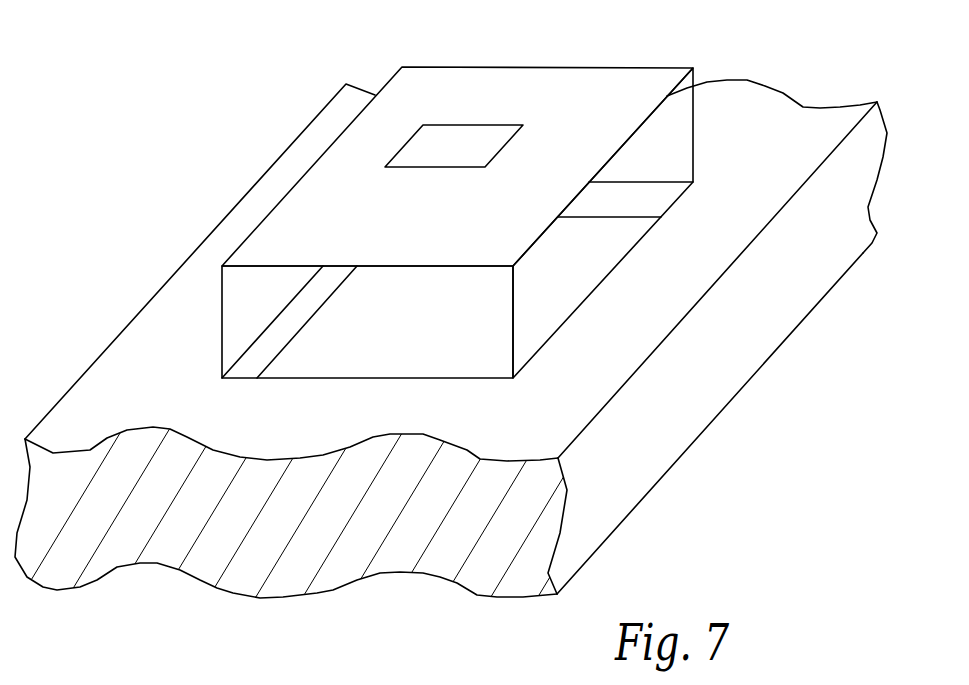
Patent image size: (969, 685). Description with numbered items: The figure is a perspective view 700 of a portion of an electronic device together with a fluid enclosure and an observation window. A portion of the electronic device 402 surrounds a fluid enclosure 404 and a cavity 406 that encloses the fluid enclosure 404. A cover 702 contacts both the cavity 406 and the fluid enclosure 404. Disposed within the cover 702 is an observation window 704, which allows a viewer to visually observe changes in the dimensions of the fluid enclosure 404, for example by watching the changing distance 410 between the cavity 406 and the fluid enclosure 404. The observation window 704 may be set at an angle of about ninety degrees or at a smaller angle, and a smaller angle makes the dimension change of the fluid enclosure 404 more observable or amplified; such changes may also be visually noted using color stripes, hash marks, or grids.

The perspective view 700 is at (150, 193).
The cover 702 is at (588, 72).
The observation window 704 is at (473, 130).
The cavity 406 is at (657, 186).
The fluid enclosure 404 is at (585, 296).
The changing distance 410 is at (258, 381).
The electronic device 402 is at (740, 387).